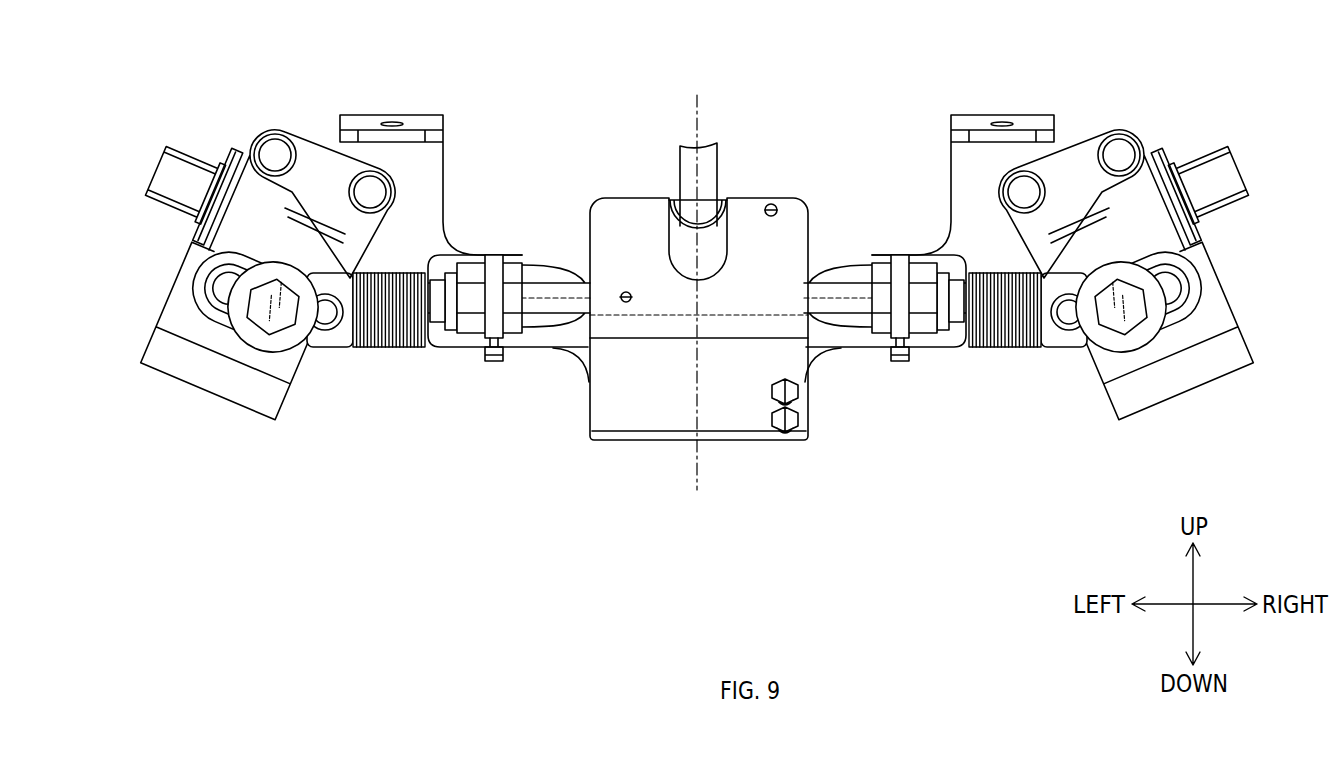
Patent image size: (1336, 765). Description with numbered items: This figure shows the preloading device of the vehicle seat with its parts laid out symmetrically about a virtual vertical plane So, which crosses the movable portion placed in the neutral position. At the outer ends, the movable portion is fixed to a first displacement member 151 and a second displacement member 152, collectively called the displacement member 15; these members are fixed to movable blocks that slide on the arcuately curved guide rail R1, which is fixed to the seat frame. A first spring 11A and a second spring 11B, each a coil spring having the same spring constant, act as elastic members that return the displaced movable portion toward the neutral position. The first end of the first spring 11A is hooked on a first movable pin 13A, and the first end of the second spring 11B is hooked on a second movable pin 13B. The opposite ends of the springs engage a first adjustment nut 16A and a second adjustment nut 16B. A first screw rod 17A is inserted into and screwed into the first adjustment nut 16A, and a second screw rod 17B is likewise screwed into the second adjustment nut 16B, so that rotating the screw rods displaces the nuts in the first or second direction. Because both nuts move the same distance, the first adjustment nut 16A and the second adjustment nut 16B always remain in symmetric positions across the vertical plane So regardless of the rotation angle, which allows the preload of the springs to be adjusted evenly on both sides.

The first spring 11A is at (372, 350).
The second spring 11B is at (1022, 352).
The first movable pin 13A is at (259, 320).
The second movable pin 13B is at (1124, 322).
The displacement member 15 is at (697, 147).
The first displacement member 151 is at (383, 115).
The second displacement member 152 is at (992, 115).
The first adjustment nut 16A is at (467, 327).
The second adjustment nut 16B is at (932, 327).
The first screw rod 17A is at (542, 302).
The second screw rod 17B is at (852, 302).
The guide rail R1 is at (1200, 156).
The virtual vertical plane So is at (703, 102).